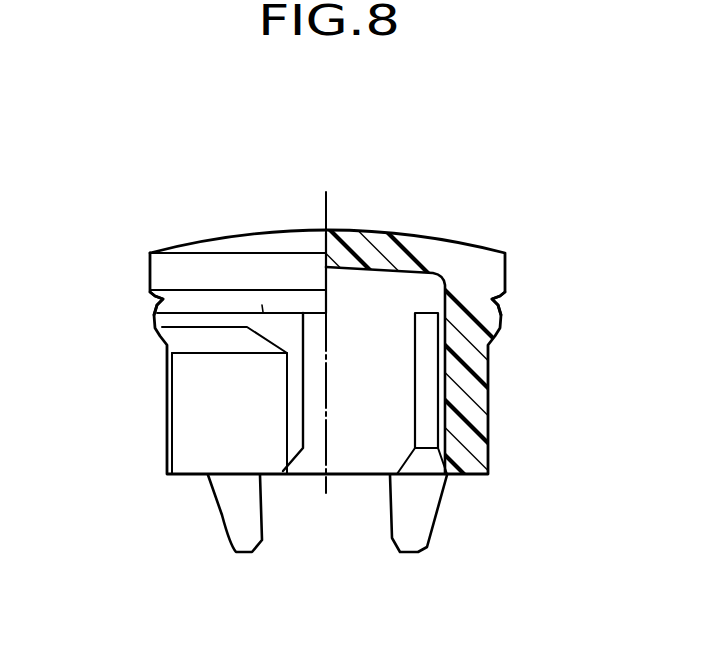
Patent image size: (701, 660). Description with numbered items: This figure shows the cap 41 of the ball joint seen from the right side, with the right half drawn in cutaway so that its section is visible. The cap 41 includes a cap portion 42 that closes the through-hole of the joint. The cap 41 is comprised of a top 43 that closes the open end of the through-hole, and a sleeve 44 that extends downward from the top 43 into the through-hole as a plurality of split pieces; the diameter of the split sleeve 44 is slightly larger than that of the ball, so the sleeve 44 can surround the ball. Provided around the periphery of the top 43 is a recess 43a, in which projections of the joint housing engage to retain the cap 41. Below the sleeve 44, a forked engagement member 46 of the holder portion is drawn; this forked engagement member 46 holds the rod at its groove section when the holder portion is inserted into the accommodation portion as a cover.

The cap 41 is at (327, 370).
The cap portion 42 is at (293, 228).
The top 43 is at (380, 231).
The recess 43a is at (163, 301).
The sleeve 44 is at (187, 406).
The forked engagement member 46 is at (248, 533).